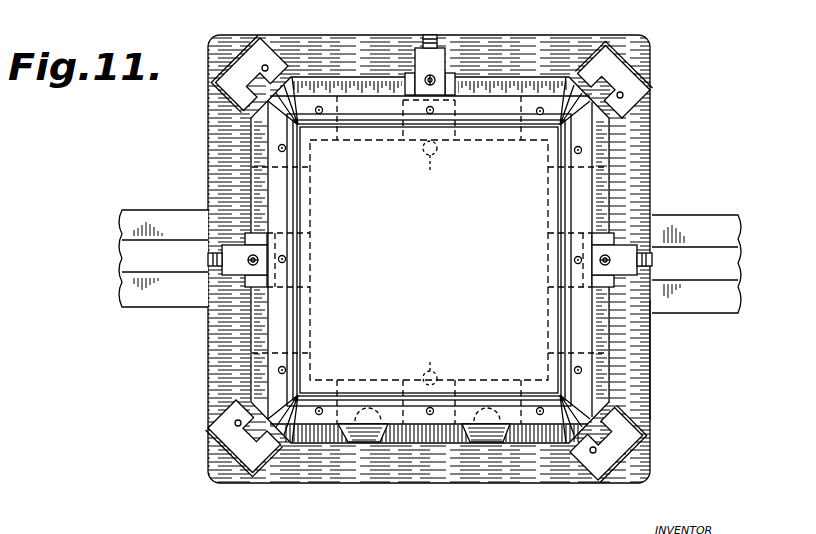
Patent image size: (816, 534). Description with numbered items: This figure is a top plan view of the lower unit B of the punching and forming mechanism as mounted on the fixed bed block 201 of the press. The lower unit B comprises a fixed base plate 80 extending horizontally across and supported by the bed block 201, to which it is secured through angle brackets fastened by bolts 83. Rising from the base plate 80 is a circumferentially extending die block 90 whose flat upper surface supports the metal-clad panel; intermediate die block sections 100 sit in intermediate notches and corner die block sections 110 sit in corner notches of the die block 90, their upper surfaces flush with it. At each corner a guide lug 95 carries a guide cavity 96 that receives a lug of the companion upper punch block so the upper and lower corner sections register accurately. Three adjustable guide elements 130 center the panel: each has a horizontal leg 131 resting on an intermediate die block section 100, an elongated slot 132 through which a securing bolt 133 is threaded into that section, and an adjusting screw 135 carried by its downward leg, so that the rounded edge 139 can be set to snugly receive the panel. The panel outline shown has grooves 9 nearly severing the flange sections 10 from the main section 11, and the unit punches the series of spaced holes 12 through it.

The lower unit B is at (668, 114).
The grooves 9 is at (517, 126).
The flange section 10 is at (497, 102).
The main section 11 is at (429, 260).
The spaced holes 12 is at (286, 150).
The fixed base plate 80 is at (642, 174).
The bolts 83 is at (426, 158).
The die block 90 is at (616, 341).
The guide lug 95 is at (242, 68).
The guide cavity 96 is at (268, 75).
The intermediate die block sections 100 is at (408, 75).
The corner die block sections 110 is at (557, 93).
The adjustable guide elements 130 is at (434, 175).
The horizontal leg 131 is at (438, 62).
The elongated slot 132 is at (250, 252).
The securing bolt 133 is at (253, 268).
The adjusting screw 135 is at (412, 8).
The rounded edge 139 is at (450, 100).
The fixed bed block 201 is at (172, 214).